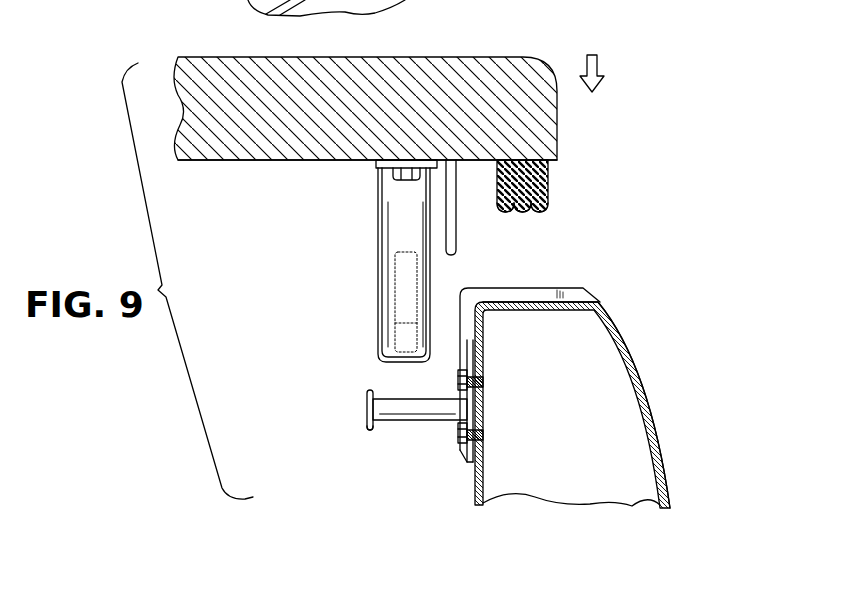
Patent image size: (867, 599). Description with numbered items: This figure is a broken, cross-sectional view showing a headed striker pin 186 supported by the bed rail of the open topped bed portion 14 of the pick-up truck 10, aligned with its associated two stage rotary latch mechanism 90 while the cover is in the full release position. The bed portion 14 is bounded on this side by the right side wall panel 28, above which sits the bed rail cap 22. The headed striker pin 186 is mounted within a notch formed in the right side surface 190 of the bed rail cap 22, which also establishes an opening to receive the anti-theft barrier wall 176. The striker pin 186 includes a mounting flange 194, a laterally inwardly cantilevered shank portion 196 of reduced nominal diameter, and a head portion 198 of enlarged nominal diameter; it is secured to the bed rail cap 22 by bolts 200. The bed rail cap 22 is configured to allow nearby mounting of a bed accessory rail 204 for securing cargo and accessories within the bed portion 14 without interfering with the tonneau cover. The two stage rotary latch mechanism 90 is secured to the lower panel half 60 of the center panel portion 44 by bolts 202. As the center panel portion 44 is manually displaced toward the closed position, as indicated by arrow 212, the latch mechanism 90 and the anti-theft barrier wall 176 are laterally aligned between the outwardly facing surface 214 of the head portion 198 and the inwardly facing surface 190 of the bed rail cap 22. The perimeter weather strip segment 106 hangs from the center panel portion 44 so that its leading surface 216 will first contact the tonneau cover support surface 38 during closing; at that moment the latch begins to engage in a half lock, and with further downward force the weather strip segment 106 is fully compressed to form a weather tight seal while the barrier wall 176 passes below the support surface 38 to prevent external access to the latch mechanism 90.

The pick-up truck 10 is at (680, 214).
The open topped bed portion 14 is at (652, 378).
The bed rail cap 22 is at (564, 303).
The right side wall panel 28 is at (661, 446).
The tonneau cover support surface 38 is at (572, 291).
The center panel portion 44 is at (495, 55).
The lower panel half 60 is at (231, 161).
The two stage rotary latch mechanism 90 is at (405, 233).
The perimeter weather strip segment 106 is at (545, 184).
The anti-theft barrier wall 176 is at (455, 242).
The headed striker pin 186 is at (356, 430).
The right side surface 190 is at (458, 356).
The mounting flange 194 is at (485, 450).
The shank portion 196 is at (397, 405).
The head portion 198 is at (367, 402).
The bolts 200 is at (483, 383).
The bolts 202 is at (406, 173).
The bed accessory rail 204 is at (150, 0).
The arrow 212 is at (598, 71).
The outwardly facing surface 214 is at (373, 428).
The leading surface 216 is at (524, 212).